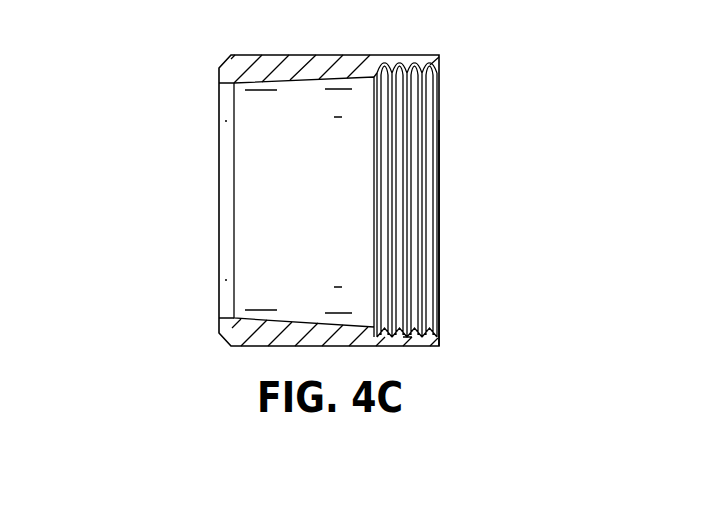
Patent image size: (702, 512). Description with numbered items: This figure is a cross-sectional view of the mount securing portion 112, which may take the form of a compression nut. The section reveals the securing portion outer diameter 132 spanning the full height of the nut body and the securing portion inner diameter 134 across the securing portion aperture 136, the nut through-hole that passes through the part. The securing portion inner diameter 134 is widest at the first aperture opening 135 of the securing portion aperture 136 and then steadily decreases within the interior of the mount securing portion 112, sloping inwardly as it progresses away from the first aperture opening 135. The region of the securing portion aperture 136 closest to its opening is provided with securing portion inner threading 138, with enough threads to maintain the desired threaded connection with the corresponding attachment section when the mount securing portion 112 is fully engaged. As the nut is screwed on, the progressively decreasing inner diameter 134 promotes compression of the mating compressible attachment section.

The mount securing portion 112 is at (508, 80).
The securing portion outer diameter 132 is at (172, 55).
The securing portion inner diameter 134 is at (303, 83).
The first aperture opening 135 is at (439, 281).
The securing portion aperture 136 is at (360, 100).
The securing portion inner threading 138 is at (422, 132).